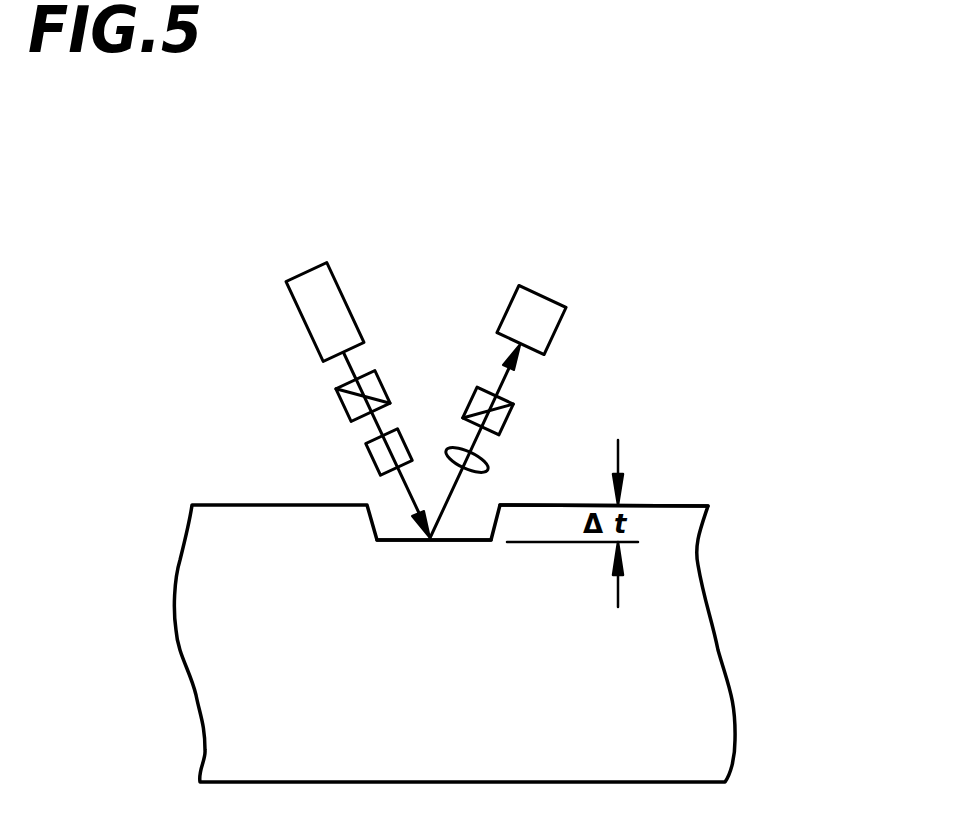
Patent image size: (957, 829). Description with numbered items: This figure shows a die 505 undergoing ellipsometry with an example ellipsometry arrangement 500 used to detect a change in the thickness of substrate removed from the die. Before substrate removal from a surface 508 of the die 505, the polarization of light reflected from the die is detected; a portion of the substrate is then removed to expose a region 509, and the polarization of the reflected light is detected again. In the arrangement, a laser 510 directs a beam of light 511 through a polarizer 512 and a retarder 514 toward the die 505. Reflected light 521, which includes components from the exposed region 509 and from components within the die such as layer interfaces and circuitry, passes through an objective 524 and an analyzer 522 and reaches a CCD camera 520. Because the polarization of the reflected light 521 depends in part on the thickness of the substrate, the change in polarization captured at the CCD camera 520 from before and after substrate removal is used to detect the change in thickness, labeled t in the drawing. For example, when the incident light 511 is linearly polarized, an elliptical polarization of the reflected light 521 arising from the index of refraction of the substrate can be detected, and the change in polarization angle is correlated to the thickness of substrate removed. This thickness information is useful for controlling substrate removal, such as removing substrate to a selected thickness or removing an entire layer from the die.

The ellipsometry arrangement 500 is at (612, 183).
The die 505 is at (718, 755).
The surface 508 is at (685, 507).
The region 509 is at (470, 542).
The laser 510 is at (300, 270).
The beam of light 511 is at (400, 491).
The polarizer 512 is at (337, 403).
The retarder 514 is at (408, 441).
The CCD camera 520 is at (557, 297).
The reflected light 521 is at (453, 493).
The analyzer 522 is at (503, 398).
The objective 524 is at (490, 462).